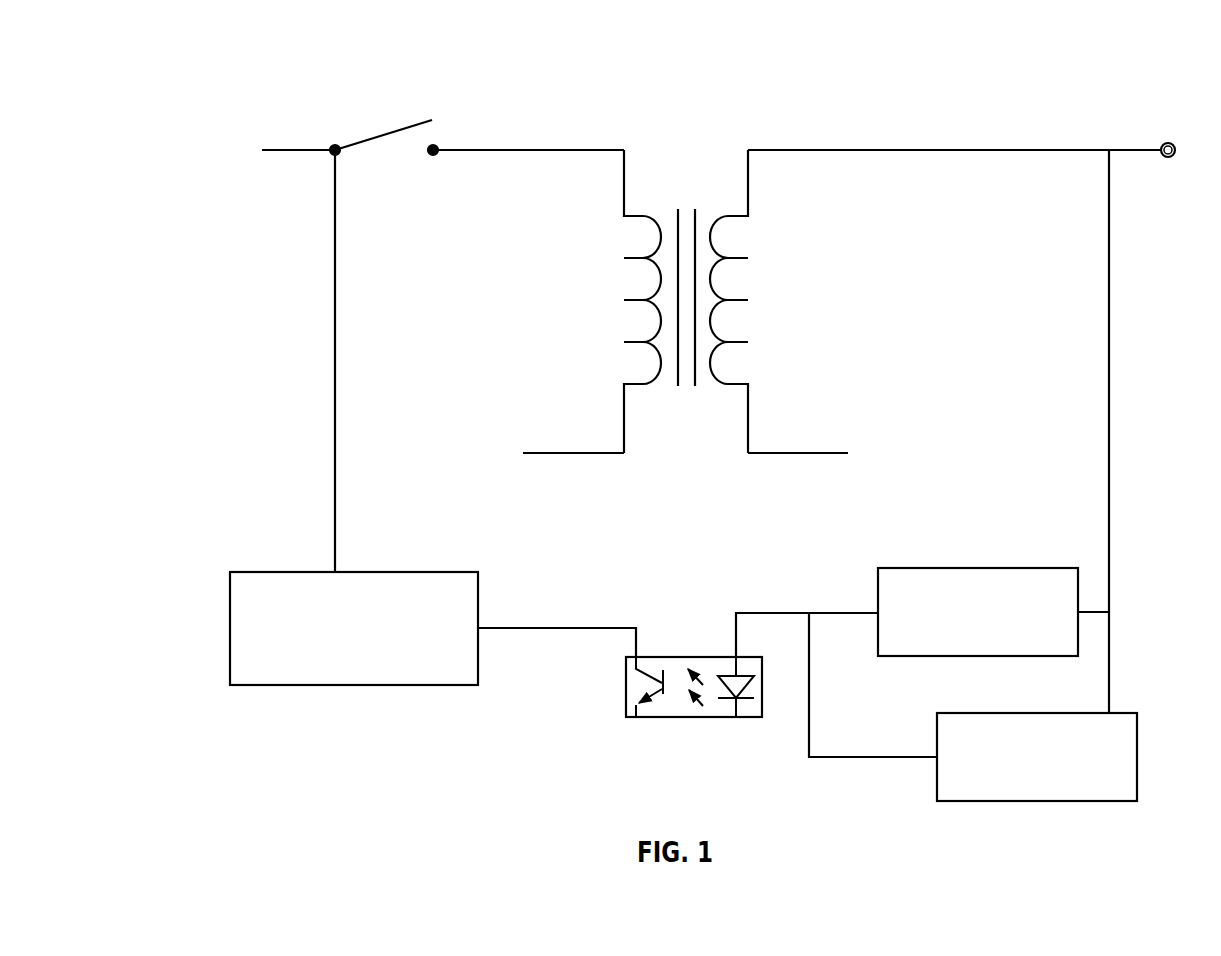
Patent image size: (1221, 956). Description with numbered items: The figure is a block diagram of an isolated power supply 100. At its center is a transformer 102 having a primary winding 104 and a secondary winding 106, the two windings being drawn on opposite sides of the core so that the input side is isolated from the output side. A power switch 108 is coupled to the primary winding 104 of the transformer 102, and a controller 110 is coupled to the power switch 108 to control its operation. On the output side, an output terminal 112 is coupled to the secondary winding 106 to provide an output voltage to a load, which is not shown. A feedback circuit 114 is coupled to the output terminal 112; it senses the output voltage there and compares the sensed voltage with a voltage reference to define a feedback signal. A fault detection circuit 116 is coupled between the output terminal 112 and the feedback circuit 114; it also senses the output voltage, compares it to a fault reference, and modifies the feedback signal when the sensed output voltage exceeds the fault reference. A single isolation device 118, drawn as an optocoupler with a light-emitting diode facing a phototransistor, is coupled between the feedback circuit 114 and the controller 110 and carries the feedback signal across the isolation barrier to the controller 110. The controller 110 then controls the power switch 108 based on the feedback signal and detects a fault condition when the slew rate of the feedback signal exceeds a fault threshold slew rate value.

The isolated power supply 100 is at (208, 73).
The transformer 102 is at (696, 113).
The primary winding 104 is at (606, 297).
The secondary winding 106 is at (779, 297).
The power switch 108 is at (392, 134).
The controller 110 is at (293, 570).
The output terminal 112 is at (1173, 140).
The feedback circuit 114 is at (945, 567).
The fault detection circuit 116 is at (1001, 712).
The isolation device 118 is at (686, 718).